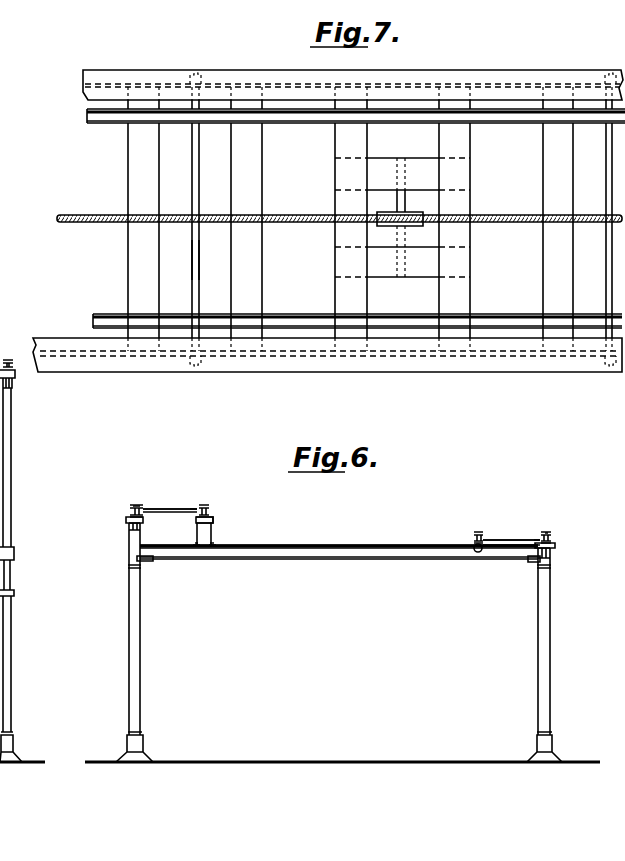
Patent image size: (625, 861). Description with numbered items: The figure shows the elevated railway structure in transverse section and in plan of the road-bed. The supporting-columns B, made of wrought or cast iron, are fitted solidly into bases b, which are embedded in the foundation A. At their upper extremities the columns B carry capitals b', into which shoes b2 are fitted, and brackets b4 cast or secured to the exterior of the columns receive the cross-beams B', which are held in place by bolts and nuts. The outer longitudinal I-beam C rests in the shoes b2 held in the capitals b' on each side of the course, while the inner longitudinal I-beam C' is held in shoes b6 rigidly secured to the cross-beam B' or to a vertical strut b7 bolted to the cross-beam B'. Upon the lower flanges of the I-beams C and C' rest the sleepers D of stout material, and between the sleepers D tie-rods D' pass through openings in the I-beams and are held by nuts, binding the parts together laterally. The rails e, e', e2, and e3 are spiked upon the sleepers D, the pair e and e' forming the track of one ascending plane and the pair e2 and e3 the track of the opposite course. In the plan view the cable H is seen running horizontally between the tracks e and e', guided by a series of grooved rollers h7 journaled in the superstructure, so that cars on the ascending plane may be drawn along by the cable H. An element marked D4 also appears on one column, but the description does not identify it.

In FIG. 6, the foundation A is at (300, 755).
In FIG. 6, the supporting-column B is at (340, 626).
In FIG. 6, the cross-beam B' is at (339, 564).
In FIG. 6, the base b is at (339, 746).
In FIG. 6, the capital b' is at (344, 543).
In FIG. 6, the shoe b2 is at (566, 541).
In FIG. 6, the bracket b4 is at (148, 561).
In FIG. 6, the shoe b6 is at (214, 520).
In FIG. 6, the vertical strut b7 is at (215, 531).
In FIG. 7, the outer longitudinal I-beam C is at (353, 74).
In FIG. 6, the outer longitudinal I-beam C is at (348, 514).
In FIG. 7, the inner longitudinal I-beam C' is at (327, 370).
In FIG. 6, the inner longitudinal I-beam C' is at (341, 514).
In FIG. 7, the sleeper D is at (376, 219).
In FIG. 6, the sleeper D is at (341, 527).
In FIG. 7, the tie-rod D' is at (206, 260).
In FIG. 6, the bracket on column D4 is at (12, 574).
In FIG. 7, the rail e is at (356, 126).
In FIG. 6, the rail e is at (170, 502).
In FIG. 7, the rail e' is at (357, 309).
In FIG. 6, the rail e' is at (190, 500).
In FIG. 6, the rail e2 is at (486, 540).
In FIG. 6, the rail e3 is at (540, 540).
In FIG. 7, the cable H is at (105, 226).
In FIG. 7, the grooved roller h7 is at (409, 227).